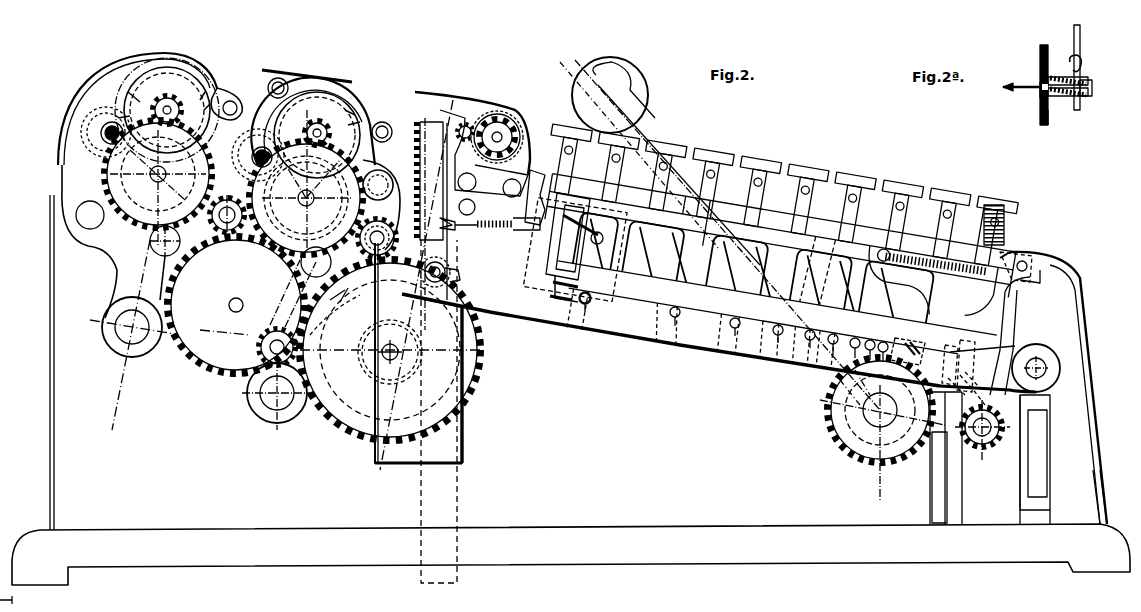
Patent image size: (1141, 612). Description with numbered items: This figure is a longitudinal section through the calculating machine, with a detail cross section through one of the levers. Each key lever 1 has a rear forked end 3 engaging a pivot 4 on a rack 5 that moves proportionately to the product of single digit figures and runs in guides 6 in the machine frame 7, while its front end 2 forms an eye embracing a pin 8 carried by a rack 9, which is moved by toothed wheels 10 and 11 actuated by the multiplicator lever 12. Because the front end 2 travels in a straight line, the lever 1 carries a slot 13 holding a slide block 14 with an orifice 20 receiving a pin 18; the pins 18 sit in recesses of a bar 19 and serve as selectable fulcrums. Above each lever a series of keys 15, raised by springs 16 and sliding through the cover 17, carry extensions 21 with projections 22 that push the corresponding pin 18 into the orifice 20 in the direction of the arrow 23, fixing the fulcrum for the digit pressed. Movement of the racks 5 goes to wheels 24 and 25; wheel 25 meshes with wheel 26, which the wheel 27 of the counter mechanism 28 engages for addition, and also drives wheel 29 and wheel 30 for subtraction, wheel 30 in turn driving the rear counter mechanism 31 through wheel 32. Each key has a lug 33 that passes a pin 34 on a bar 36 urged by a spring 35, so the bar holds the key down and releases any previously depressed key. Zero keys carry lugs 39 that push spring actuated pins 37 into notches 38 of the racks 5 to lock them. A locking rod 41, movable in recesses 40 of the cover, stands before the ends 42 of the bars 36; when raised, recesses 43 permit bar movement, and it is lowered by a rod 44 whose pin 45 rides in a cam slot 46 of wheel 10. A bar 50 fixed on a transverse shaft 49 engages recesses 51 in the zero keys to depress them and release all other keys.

In FIG. 2, the key lever 1 is at (700, 345).
In FIG. 2A, the key lever 1 is at (1040, 47).
In FIG. 2, the front end of lever 2 is at (1048, 350).
In FIG. 2, the rear forked end 3 is at (430, 295).
In FIG. 2, the pivot 4 is at (450, 280).
In FIG. 2, the rack 5 is at (420, 157).
In FIG. 2, the guide 6 is at (378, 457).
In FIG. 2, the machine frame 7 is at (531, 540).
In FIG. 2, the pin 8 is at (1038, 368).
In FIG. 2, the rack 9 is at (1048, 448).
In FIG. 2, the toothed wheel 10 is at (968, 440).
In FIG. 2, the toothed wheel 11 is at (891, 478).
In FIG. 2, the multiplicator lever 12 is at (640, 120).
In FIG. 2, the slot 13 is at (558, 300).
In FIG. 2, the slide block 14 is at (697, 361).
In FIG. 2A, the slide block 14 is at (1044, 105).
In FIG. 2, the key 15 is at (782, 184).
In FIG. 2, the spring 16 is at (1004, 228).
In FIG. 2, the cover 17 is at (816, 267).
In FIG. 2A, the pin 18 is at (1056, 77).
In FIG. 2, the bar 19 is at (948, 350).
In FIG. 2A, the bar 19 is at (1062, 97).
In FIG. 2, the orifice 20 is at (592, 299).
In FIG. 2A, the orifice 20 is at (1041, 90).
In FIG. 2, the extension 21 is at (575, 250).
In FIG. 2A, the extension 21 is at (1077, 37).
In FIG. 2A, the projection 22 is at (1082, 62).
In FIG. 2A, the arrow 23 is at (1024, 78).
In FIG. 2, the wheel 24 is at (372, 360).
In FIG. 2, the wheel 25 is at (330, 418).
In FIG. 2, the wheel 26 is at (317, 193).
In FIG. 2, the wheel of counter mechanism 27 is at (378, 185).
In FIG. 2, the counter mechanism 28 is at (320, 125).
In FIG. 2, the wheel 29 is at (212, 362).
In FIG. 2, the wheel 30 is at (229, 207).
In FIG. 2, the rear counter mechanism 31 is at (180, 100).
In FIG. 2, the wheel 32 is at (205, 170).
In FIG. 2, the lug 33 is at (733, 227).
In FIG. 2, the pin 34 is at (778, 271).
In FIG. 2, the spring 35 is at (927, 291).
In FIG. 2, the bar 36 is at (927, 294).
In FIG. 2, the spring actuated pin 37 is at (478, 222).
In FIG. 2, the notch 38 is at (445, 224).
In FIG. 2, the lug 39 is at (548, 180).
In FIG. 2, the recess 40 is at (1050, 268).
In FIG. 2, the locking rod 41 is at (1035, 255).
In FIG. 2, the end of bar 42 is at (1022, 283).
In FIG. 2, the recess 43 is at (1022, 262).
In FIG. 2, the rod 44 is at (1010, 313).
In FIG. 2, the pin 45 is at (966, 388).
In FIG. 2, the cam slot 46 is at (992, 448).
In FIG. 2, the shaft 49 is at (601, 246).
In FIG. 2, the bar 50 is at (568, 222).
In FIG. 2, the recess 51 is at (574, 230).